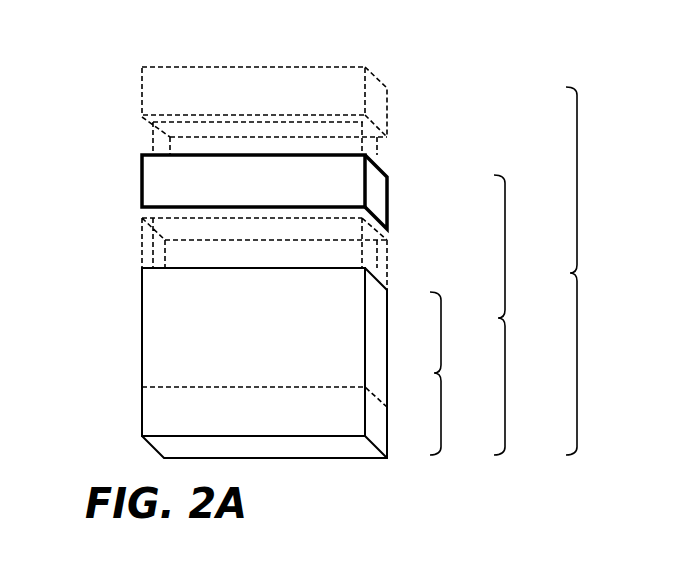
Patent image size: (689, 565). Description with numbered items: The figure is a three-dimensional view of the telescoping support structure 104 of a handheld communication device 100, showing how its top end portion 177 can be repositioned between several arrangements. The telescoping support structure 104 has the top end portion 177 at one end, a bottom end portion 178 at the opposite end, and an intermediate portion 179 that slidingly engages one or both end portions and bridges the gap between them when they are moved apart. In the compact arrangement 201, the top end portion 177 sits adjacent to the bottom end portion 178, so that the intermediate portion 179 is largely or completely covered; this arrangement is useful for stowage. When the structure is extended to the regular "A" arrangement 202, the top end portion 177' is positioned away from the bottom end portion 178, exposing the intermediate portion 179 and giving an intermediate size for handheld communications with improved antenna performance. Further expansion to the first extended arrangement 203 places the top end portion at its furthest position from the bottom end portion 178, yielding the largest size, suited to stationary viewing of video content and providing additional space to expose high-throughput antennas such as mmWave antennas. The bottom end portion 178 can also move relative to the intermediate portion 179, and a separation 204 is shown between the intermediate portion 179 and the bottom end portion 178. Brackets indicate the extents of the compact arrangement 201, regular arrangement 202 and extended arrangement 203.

The communication device 100 is at (72, 108).
The top end portion in regular "A" arrangement 177' is at (325, 150).
The top end portion 177 is at (323, 296).
The intermediate portion 179 is at (145, 245).
The telescoping support structure 104 is at (141, 300).
The bottom end portion 178 is at (142, 352).
The separation 204 is at (142, 387).
The compact arrangement 201 is at (456, 373).
The regular "A" arrangement 202 is at (520, 315).
The first extended arrangement 203 is at (592, 271).